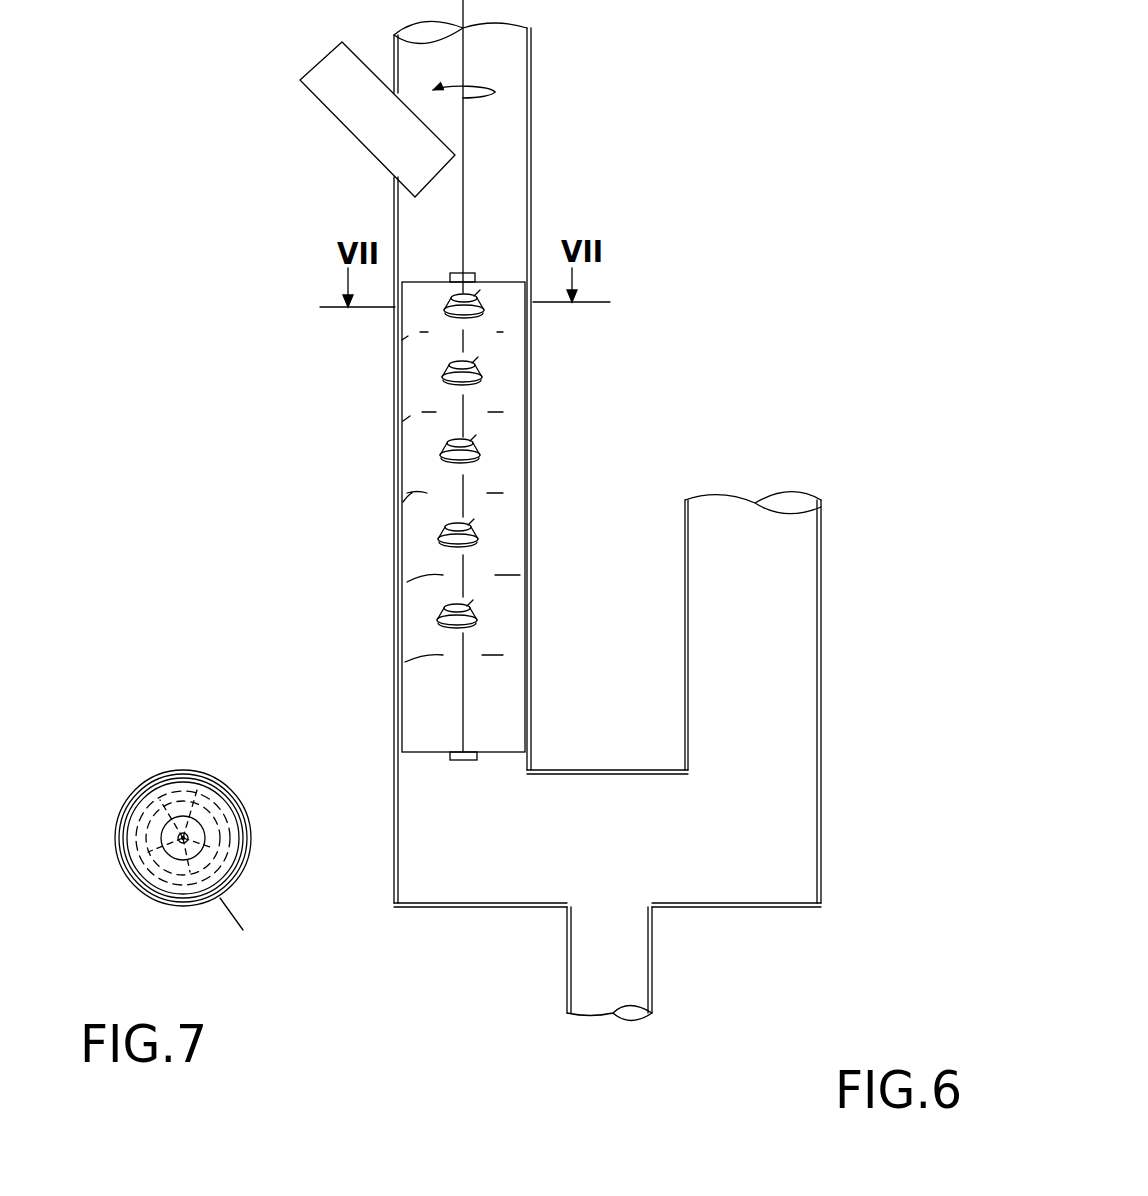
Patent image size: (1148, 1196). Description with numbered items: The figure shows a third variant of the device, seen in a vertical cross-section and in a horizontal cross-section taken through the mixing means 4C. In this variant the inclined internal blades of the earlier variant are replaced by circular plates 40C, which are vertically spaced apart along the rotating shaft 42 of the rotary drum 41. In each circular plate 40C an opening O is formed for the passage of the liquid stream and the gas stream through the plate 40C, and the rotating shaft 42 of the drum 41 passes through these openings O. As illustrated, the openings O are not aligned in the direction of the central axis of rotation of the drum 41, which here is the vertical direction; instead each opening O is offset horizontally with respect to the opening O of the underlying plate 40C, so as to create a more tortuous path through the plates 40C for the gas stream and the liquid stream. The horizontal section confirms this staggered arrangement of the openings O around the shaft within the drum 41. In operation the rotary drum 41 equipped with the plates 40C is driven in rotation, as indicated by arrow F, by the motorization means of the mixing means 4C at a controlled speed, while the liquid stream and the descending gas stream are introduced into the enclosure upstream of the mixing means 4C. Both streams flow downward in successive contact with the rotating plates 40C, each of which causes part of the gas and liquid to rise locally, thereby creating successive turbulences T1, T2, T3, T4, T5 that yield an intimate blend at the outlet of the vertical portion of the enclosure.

In FIG. 6, the mixing means 4C is at (431, 380).
In FIG. 6, the circular plate 40C is at (505, 333).
In FIG. 7, the circular plate 40C is at (212, 815).
In FIG. 6, the rotary drum 41 is at (396, 293).
In FIG. 7, the rotary drum 41 is at (182, 836).
In FIG. 6, the rotating shaft 42 is at (463, 338).
In FIG. 6, the turbulence T1 is at (441, 308).
In FIG. 6, the turbulence T2 is at (437, 377).
In FIG. 6, the turbulence T3 is at (437, 455).
In FIG. 6, the turbulence T4 is at (437, 538).
In FIG. 6, the turbulence T5 is at (433, 625).
In FIG. 6, the opening O is at (492, 315).
In FIG. 7, the opening O is at (198, 783).
In FIG. 6, the arrow F is at (481, 78).